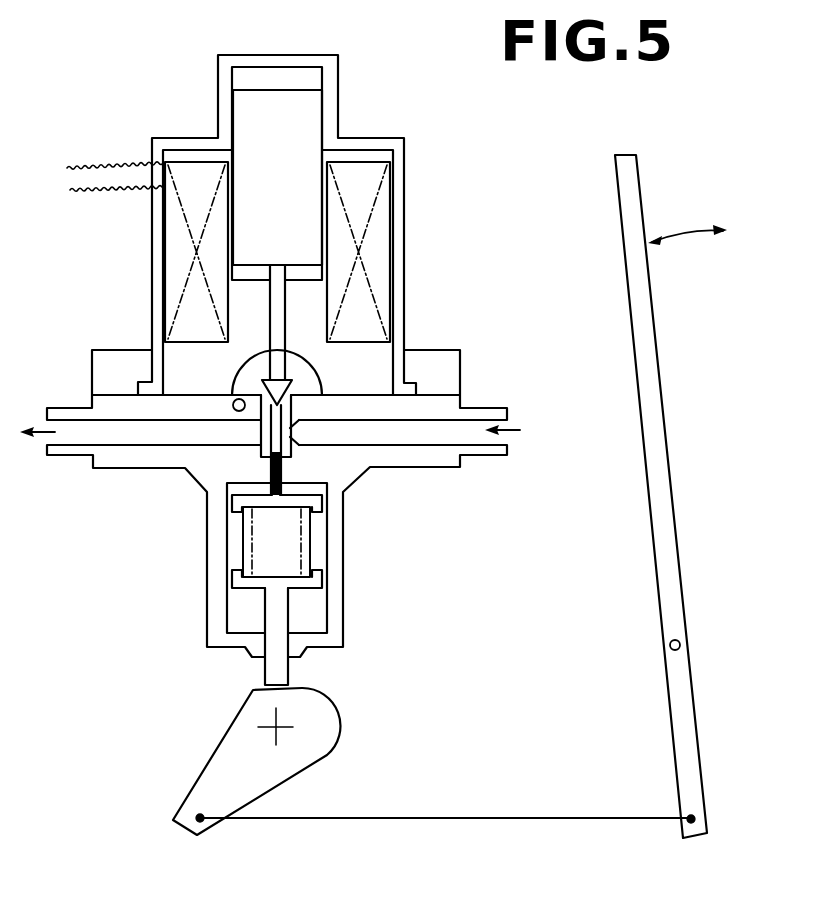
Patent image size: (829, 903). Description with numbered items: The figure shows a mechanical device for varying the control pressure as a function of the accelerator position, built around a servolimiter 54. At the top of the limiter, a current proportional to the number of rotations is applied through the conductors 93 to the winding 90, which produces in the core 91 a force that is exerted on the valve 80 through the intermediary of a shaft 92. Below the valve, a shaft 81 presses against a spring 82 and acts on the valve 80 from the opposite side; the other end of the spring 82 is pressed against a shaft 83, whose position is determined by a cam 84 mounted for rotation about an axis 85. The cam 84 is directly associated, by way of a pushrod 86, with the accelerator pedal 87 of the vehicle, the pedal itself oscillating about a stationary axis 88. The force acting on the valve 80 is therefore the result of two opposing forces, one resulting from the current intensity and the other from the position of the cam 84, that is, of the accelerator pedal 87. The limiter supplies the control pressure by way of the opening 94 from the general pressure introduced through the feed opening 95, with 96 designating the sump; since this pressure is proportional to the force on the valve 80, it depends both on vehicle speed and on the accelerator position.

The servolimiter 54 is at (461, 350).
The valve 80 is at (278, 390).
The shaft 81 is at (278, 440).
The spring 82 is at (313, 548).
The shaft 83 is at (280, 618).
The cam 84 is at (308, 703).
The axis 85 is at (282, 730).
The pushrod 86 is at (342, 817).
The accelerator pedal 87 is at (667, 542).
The stationary axis 88 is at (670, 645).
The winding 90 is at (383, 195).
The core 91 is at (290, 127).
The shaft 92 is at (275, 315).
The conductors 93 is at (80, 165).
The opening 94 is at (52, 432).
The feed opening 95 is at (517, 432).
The sump 96 is at (237, 400).